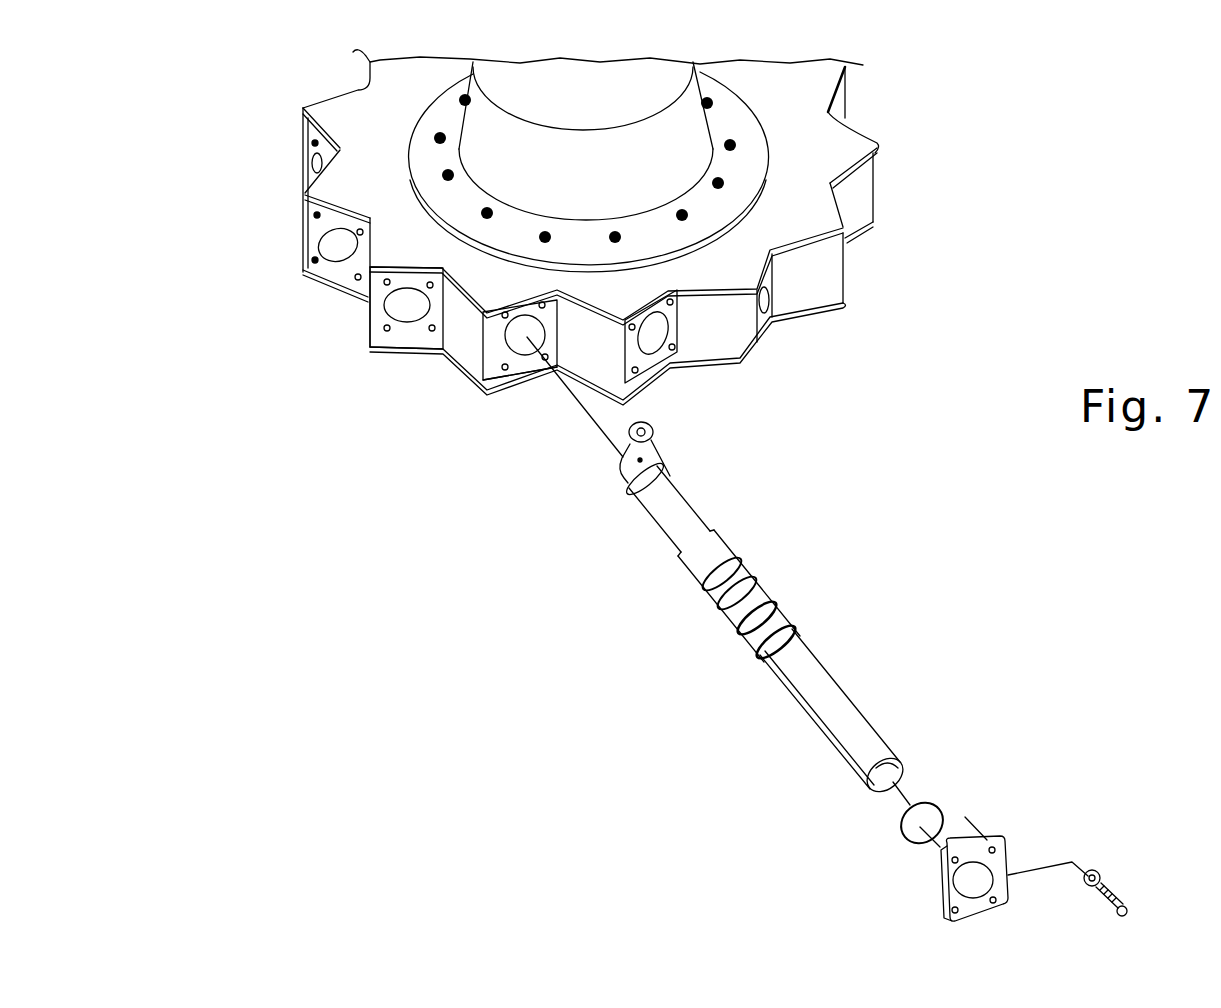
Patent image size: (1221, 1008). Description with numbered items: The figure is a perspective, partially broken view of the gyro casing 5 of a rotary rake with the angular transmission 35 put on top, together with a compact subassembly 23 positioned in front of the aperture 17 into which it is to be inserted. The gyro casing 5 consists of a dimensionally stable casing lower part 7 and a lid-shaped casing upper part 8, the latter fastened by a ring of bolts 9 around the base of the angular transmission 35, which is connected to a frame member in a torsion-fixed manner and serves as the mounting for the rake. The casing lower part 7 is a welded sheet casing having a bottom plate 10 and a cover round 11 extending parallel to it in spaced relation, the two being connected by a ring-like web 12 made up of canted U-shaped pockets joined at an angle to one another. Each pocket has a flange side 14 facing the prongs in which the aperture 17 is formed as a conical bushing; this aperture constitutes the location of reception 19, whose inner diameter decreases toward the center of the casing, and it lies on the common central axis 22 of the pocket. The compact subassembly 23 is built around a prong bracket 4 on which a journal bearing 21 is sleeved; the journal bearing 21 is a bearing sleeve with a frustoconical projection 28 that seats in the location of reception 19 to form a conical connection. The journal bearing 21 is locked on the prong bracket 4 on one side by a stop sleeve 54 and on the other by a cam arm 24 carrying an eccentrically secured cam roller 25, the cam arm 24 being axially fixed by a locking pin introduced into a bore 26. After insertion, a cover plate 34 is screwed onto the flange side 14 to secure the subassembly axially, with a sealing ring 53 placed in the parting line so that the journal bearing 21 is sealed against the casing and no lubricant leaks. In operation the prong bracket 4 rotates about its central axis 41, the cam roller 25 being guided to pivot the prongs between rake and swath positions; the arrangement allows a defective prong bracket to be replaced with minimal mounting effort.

The gyro casing 5 is at (880, 87).
The casing lower part 7 is at (894, 138).
The casing upper part 8 is at (753, 112).
The bolts 9 is at (487, 212).
The bottom plate 10 is at (840, 243).
The cover round 11 is at (830, 200).
The ring-like web 12 is at (870, 272).
The flange side 14 is at (493, 355).
The aperture 17 is at (523, 380).
The location of reception 19 is at (653, 342).
The journal bearing 21 is at (703, 520).
The central axis 22 is at (407, 307).
The compact subassembly 23 is at (734, 597).
The cam arm 24 is at (650, 430).
The cam roller 25 is at (653, 468).
The bore 26 is at (638, 468).
The projection 28 is at (708, 587).
The cover plate 34 is at (937, 882).
The angular transmission 35 is at (628, 82).
The central axis 41 is at (973, 880).
The prong bracket 4 is at (882, 737).
The sealing ring 53 is at (940, 807).
The stop sleeve 54 is at (787, 630).